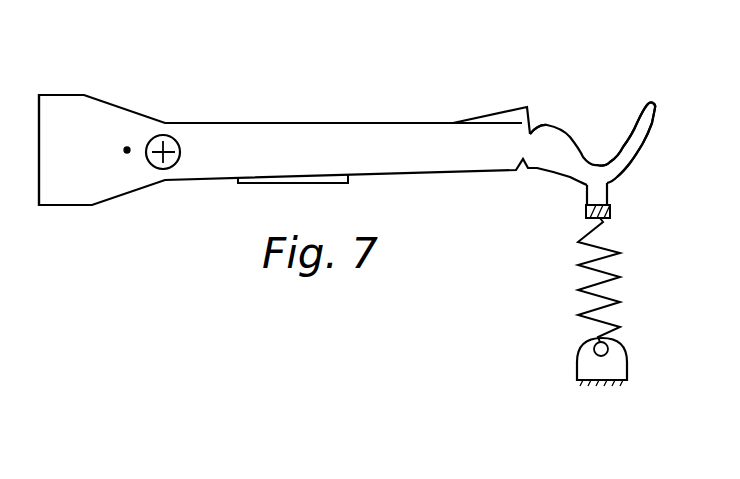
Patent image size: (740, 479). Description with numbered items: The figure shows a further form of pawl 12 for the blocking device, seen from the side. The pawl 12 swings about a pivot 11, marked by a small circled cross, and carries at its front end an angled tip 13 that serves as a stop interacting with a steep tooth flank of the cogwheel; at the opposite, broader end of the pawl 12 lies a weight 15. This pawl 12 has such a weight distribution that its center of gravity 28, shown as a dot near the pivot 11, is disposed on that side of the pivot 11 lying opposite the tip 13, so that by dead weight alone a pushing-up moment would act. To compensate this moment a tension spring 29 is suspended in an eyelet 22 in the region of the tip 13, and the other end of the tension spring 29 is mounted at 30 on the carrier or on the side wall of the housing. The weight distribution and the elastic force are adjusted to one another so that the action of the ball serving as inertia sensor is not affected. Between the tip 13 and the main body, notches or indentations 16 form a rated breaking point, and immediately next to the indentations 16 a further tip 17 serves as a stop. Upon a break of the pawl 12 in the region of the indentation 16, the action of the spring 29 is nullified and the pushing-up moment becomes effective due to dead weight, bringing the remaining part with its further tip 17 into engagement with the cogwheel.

The pivot 11 is at (180, 147).
The pawl 12 is at (307, 152).
The angled tip 13 is at (640, 133).
The weight 15 is at (62, 150).
The indentations 16 is at (530, 127).
The further tip 17 is at (510, 108).
The eyelet 22 is at (583, 200).
The center of gravity 28 is at (127, 148).
The tension spring 29 is at (580, 297).
The spring mounting 30 is at (573, 370).